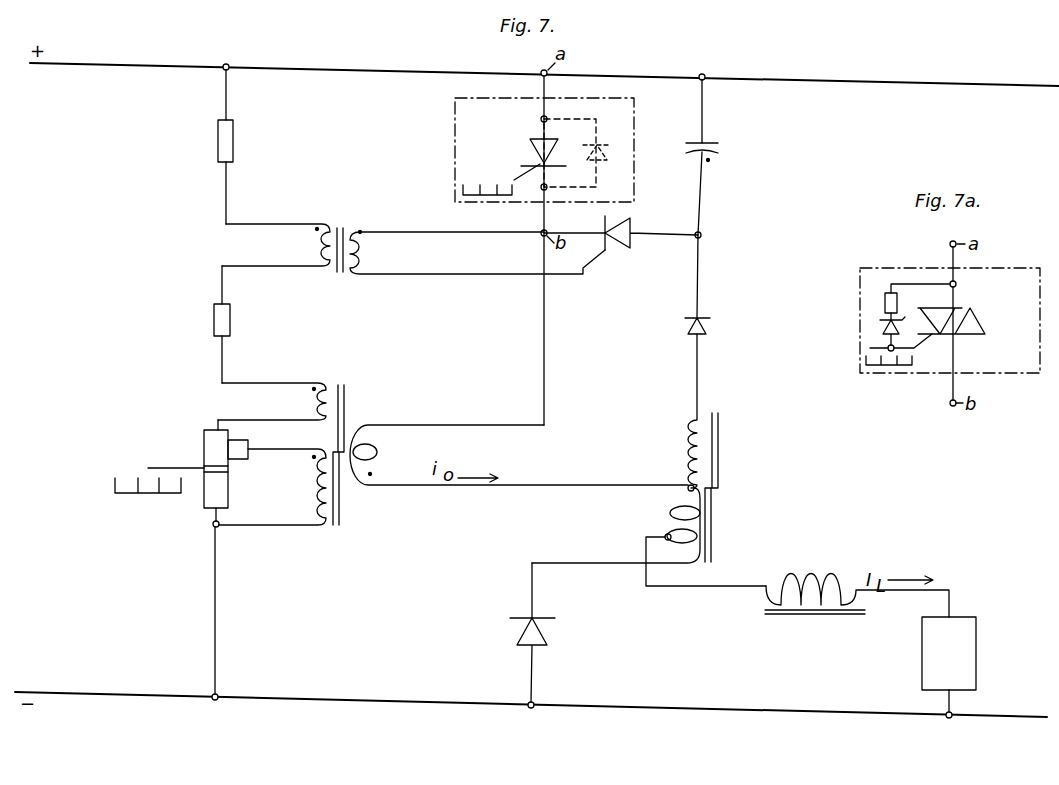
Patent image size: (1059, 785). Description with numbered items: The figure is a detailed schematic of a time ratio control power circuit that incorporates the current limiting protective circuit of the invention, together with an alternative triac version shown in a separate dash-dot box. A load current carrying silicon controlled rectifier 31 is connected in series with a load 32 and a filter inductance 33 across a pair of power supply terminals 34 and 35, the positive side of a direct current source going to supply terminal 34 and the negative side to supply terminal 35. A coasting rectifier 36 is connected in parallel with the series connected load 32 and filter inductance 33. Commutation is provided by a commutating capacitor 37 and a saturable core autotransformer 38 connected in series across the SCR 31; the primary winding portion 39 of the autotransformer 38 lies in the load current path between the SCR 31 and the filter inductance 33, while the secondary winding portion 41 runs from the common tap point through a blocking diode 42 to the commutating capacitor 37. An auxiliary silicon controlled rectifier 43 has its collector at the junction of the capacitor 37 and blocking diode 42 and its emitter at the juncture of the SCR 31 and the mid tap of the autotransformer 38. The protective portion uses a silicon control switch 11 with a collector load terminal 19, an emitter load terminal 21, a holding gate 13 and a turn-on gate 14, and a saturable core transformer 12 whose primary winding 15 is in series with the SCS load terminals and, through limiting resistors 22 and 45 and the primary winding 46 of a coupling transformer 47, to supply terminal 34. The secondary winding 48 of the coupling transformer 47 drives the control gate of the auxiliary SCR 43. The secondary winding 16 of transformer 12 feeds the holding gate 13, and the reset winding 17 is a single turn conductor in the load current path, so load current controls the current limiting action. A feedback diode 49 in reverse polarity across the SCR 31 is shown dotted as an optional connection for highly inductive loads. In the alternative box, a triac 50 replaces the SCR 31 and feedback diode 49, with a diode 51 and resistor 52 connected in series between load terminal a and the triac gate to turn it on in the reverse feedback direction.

In FIG. 7, the silicon control switch 11 is at (203, 446).
In FIG. 7, the saturable core transformer 12 is at (364, 519).
In FIG. 7, the holding gate 13 is at (248, 447).
In FIG. 7, the turn-on gate 14 is at (228, 470).
In FIG. 7, the primary winding 15 is at (312, 403).
In FIG. 7, the secondary winding 16 is at (312, 490).
In FIG. 7, the reset winding 17 is at (378, 452).
In FIG. 7, the load terminal 19 is at (216, 430).
In FIG. 7, the load terminal 21 is at (212, 510).
In FIG. 7, the current limiting resistor 22 is at (230, 320).
In FIG. 7, the load current carrying silicon controlled rectifier 31 is at (530, 143).
In FIG. 7, the load 32 is at (965, 622).
In FIG. 7, the filter inductance 33 is at (810, 577).
In FIG. 7, the power supply terminal 34 is at (308, 66).
In FIG. 7, the power supply terminal 35 is at (338, 699).
In FIG. 7, the coasting rectifier 36 is at (546, 640).
In FIG. 7, the commutating capacitor 37 is at (718, 142).
In FIG. 7, the saturable core autotransformer 38 is at (743, 519).
In FIG. 7, the primary winding portion 39 is at (669, 513).
In FIG. 7, the secondary winding portion 41 is at (684, 445).
In FIG. 7, the blocking diode 42 is at (708, 326).
In FIG. 7, the auxiliary silicon controlled rectifier 43 is at (625, 244).
In FIG. 7, the limiting resistor 45 is at (233, 145).
In FIG. 7, the primary winding 46 is at (314, 244).
In FIG. 7, the coupling transformer 47 is at (333, 265).
In FIG. 7, the secondary winding 48 is at (364, 250).
In FIG. 7, the feedback diode 49 is at (605, 155).
In FIG. 7A, the triac 50 is at (975, 312).
In FIG. 7A, the diode 51 is at (878, 329).
In FIG. 7A, the resistor 52 is at (898, 303).